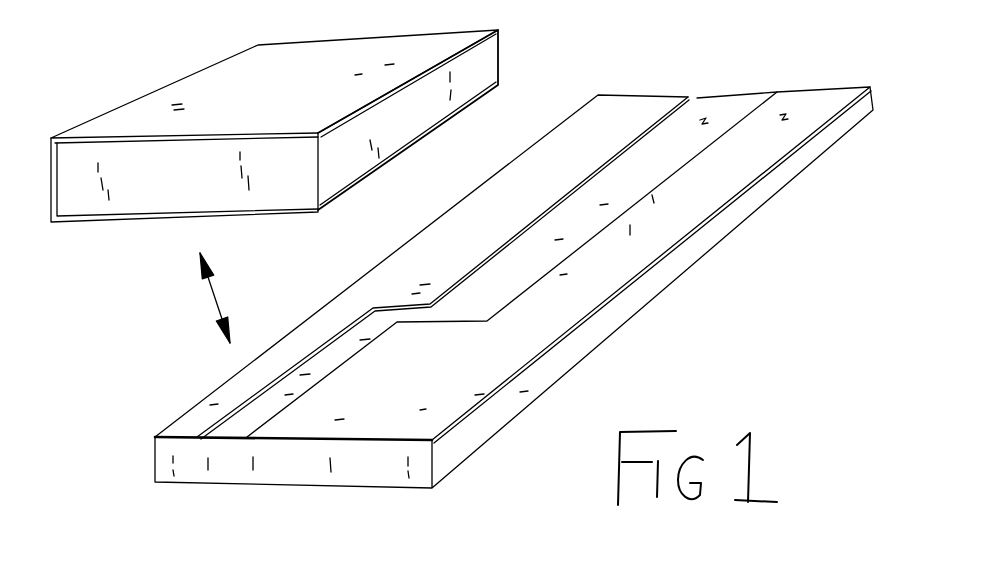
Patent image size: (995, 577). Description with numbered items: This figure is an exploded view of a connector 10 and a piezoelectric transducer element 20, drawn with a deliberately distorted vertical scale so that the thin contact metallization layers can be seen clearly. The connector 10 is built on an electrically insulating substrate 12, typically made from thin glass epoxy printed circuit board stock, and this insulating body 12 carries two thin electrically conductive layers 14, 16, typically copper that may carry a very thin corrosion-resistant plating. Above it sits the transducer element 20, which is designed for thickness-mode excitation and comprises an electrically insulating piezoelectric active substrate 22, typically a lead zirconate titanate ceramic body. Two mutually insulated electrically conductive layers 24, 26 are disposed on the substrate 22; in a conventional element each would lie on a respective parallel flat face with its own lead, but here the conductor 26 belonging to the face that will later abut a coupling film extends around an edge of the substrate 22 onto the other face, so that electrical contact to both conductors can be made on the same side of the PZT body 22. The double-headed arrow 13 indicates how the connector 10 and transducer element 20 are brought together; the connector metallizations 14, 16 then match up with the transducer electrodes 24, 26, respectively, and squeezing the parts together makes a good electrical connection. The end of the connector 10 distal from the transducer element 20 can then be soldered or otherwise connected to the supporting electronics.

The connector 10 is at (717, 300).
The electrically insulating substrate 12 is at (594, 336).
The double-headed arrow 13 is at (213, 300).
The electrically conductive layer 14 is at (725, 170).
The electrically conductive layer 16 is at (497, 190).
The piezoelectric transducer element 20 is at (140, 262).
The piezoelectric active substrate 22 is at (482, 68).
The electrically conductive layer 24 is at (243, 214).
The electrically conductive layer 26 is at (280, 96).